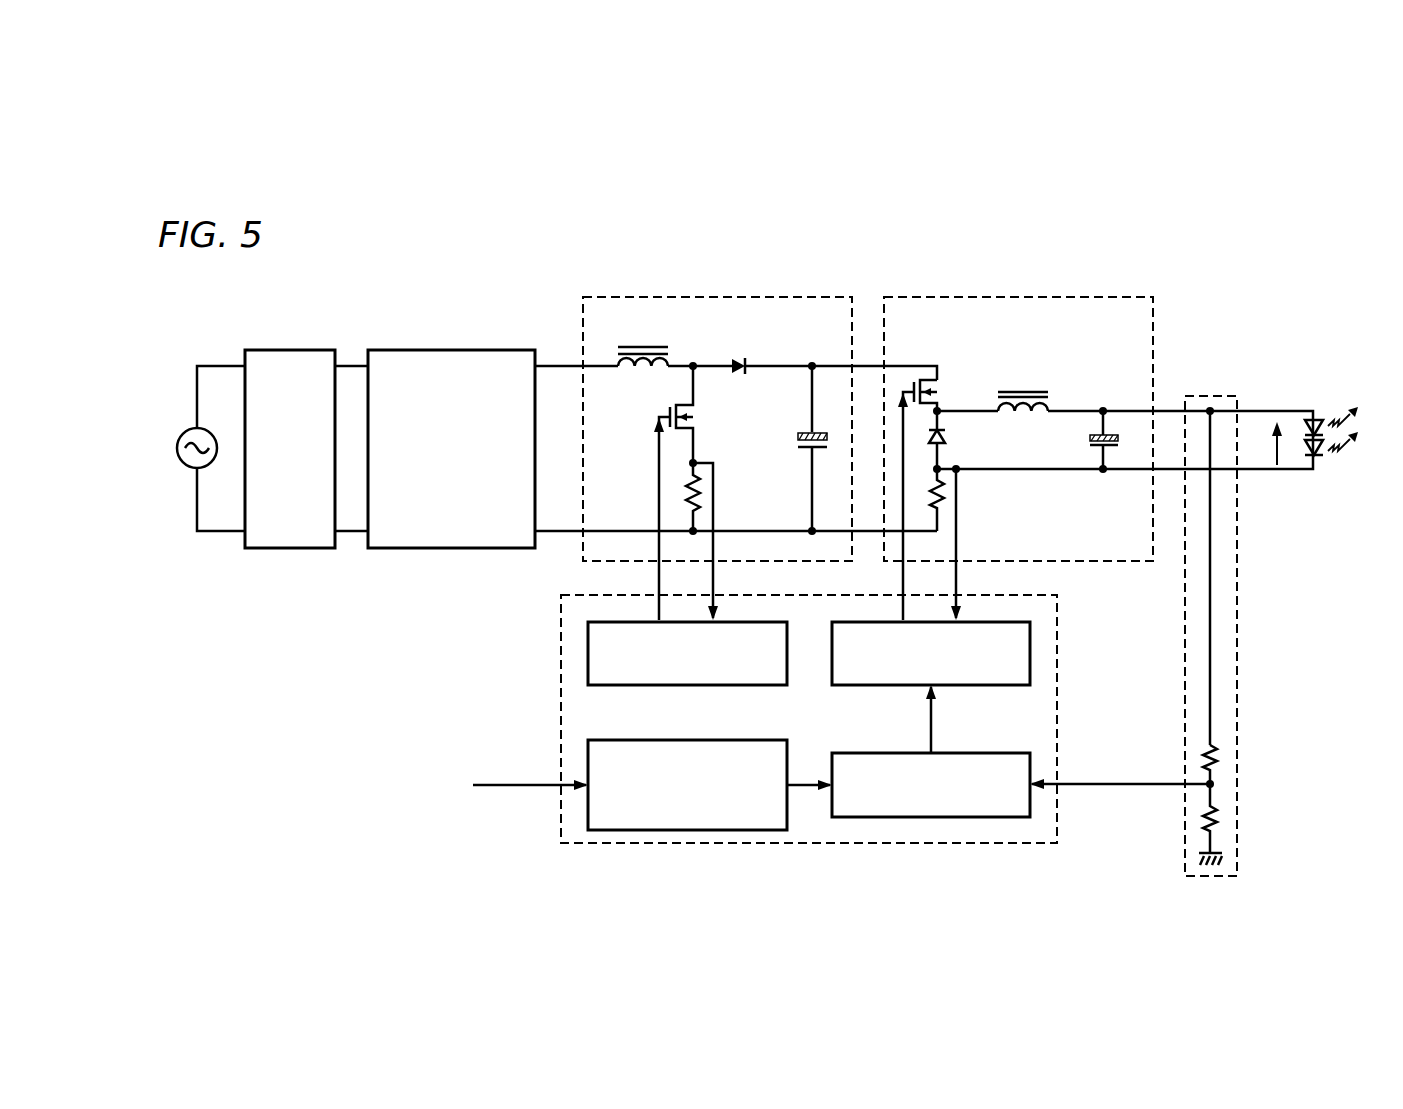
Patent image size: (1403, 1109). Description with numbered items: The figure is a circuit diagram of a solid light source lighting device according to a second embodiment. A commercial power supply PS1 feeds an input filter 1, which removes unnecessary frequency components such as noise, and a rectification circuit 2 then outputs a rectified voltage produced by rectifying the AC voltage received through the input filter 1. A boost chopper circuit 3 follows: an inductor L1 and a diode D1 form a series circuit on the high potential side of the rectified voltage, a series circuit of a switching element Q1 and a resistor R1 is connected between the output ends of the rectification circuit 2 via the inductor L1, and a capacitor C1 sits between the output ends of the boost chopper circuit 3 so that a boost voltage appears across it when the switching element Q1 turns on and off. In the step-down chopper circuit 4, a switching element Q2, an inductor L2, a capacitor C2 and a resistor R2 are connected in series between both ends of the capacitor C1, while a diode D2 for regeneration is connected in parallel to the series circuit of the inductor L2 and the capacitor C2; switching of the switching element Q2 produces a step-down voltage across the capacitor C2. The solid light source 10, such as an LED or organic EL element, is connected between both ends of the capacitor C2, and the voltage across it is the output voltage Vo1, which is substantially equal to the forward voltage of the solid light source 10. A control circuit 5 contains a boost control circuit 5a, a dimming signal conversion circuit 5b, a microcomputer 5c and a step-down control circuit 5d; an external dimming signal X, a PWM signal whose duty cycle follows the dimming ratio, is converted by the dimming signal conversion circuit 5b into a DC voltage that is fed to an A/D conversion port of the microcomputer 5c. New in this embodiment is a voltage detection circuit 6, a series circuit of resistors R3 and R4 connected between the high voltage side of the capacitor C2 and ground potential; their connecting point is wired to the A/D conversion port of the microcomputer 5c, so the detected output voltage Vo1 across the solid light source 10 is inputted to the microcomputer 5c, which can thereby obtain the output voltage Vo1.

The input filter 1 is at (289, 359).
The rectification circuit 2 is at (462, 360).
The boost chopper circuit 3 is at (609, 298).
The step-down chopper circuit 4 is at (1103, 303).
The control circuit 5 is at (1057, 717).
The boost control circuit 5a is at (743, 687).
The dimming signal conversion circuit 5b is at (643, 745).
The microcomputer 5c is at (881, 758).
The step-down control circuit 5d is at (980, 687).
The voltage detection circuit 6 is at (1237, 610).
The solid light source 10 is at (1323, 452).
The commercial power supply PS1 is at (187, 430).
The inductor L1 is at (643, 339).
The diode D1 is at (741, 347).
The switching element Q1 is at (691, 493).
The capacitor C1 is at (802, 448).
The resistor R1 is at (702, 498).
The switching element Q2 is at (935, 496).
The inductor L2 is at (1023, 384).
The diode for regeneration D2 is at (955, 440).
The capacitor C2 is at (1085, 440).
The resistor R2 is at (942, 495).
The resistor R3 is at (1218, 757).
The resistor R4 is at (1218, 819).
The output voltage Vo1 is at (1279, 447).
The dimming signal X is at (518, 787).